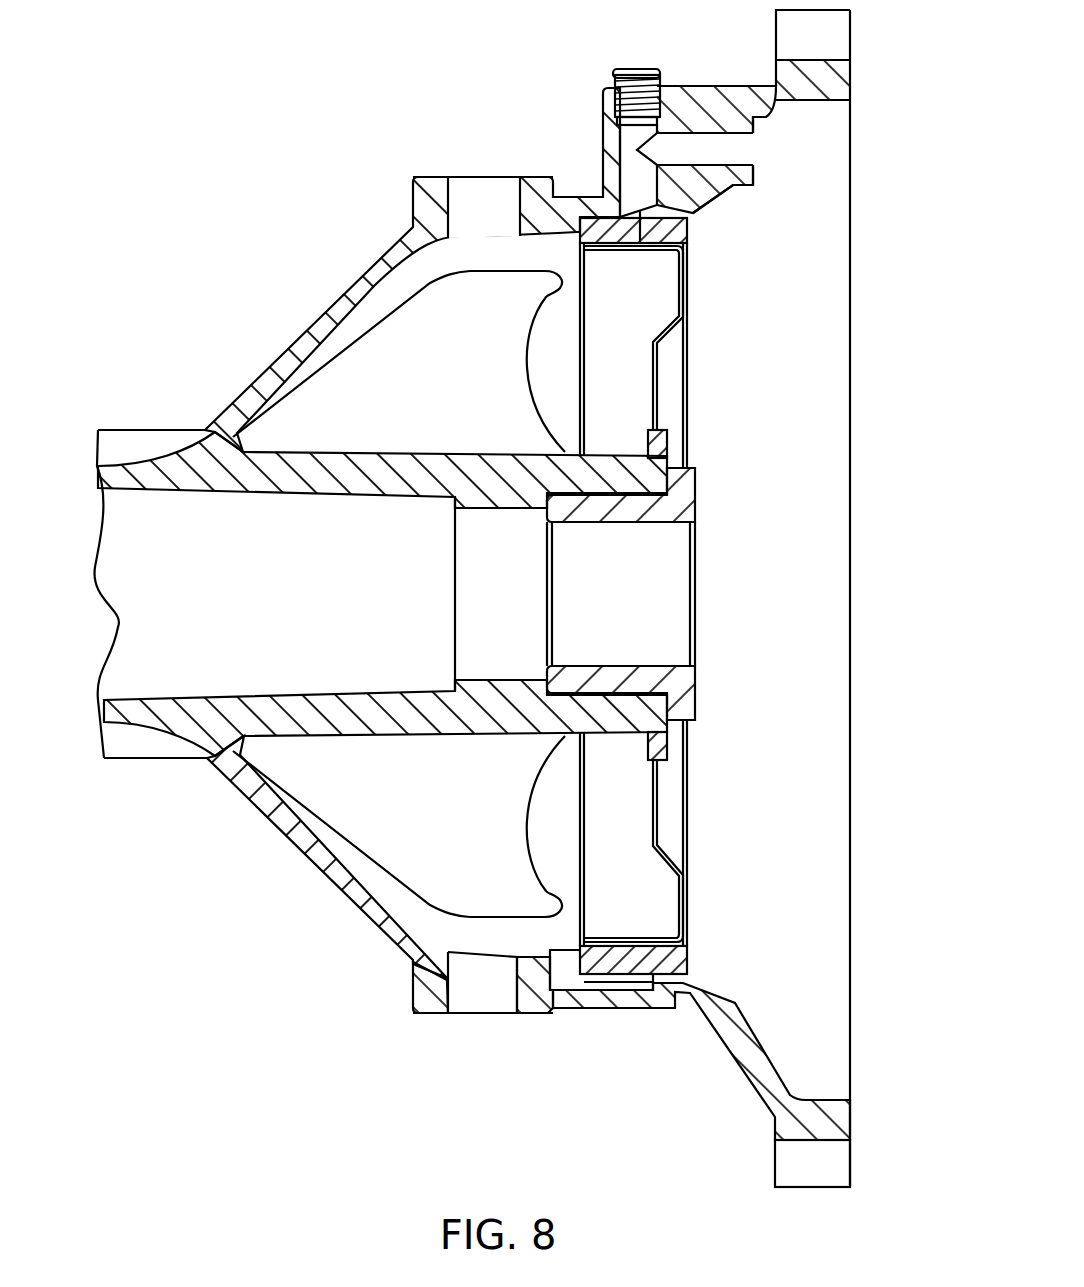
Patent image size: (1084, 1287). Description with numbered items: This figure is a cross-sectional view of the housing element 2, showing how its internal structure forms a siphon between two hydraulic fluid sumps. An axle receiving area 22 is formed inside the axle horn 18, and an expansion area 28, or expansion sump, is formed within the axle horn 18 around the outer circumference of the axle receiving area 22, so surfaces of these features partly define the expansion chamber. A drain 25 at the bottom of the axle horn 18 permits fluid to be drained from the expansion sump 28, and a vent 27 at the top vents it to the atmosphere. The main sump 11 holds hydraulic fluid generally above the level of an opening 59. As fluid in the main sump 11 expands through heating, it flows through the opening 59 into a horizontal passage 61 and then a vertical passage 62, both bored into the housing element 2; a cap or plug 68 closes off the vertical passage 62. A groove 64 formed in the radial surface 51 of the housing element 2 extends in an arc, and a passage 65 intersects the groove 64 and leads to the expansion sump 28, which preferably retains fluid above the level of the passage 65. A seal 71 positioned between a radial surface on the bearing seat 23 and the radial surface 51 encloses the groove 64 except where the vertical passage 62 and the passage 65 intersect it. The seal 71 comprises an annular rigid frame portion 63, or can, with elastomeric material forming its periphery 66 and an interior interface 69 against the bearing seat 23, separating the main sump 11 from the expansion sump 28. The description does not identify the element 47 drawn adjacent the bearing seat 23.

The housing element 2 is at (735, 1050).
The main sump 11 is at (756, 658).
The axle horn 18 is at (322, 318).
The axle receiving area 22 is at (264, 608).
The bearing seat 23 is at (640, 470).
The drain 25 is at (483, 1003).
The vent 27 is at (485, 197).
The expansion sump 28 is at (429, 383).
The bearing hub 47 is at (697, 478).
The radial surface 51 is at (670, 233).
The opening 59 is at (756, 166).
The horizontal passage 61 is at (700, 145).
The vertical passage 62 is at (632, 178).
The frame portion 63 is at (680, 352).
The groove 64 is at (665, 248).
The passage 65 is at (570, 976).
The periphery 66 is at (688, 958).
The plug 68 is at (640, 69).
The interior interface 69 is at (670, 452).
The seal 71 is at (672, 848).